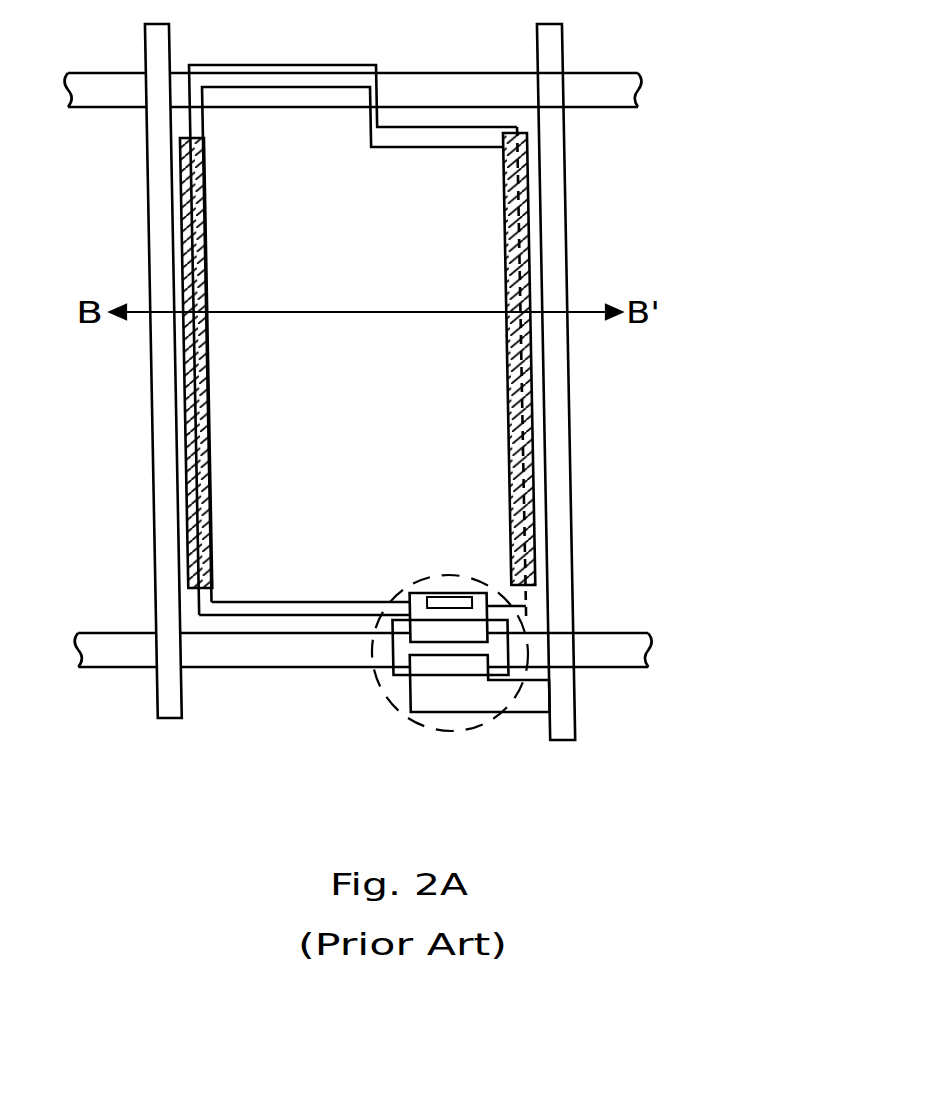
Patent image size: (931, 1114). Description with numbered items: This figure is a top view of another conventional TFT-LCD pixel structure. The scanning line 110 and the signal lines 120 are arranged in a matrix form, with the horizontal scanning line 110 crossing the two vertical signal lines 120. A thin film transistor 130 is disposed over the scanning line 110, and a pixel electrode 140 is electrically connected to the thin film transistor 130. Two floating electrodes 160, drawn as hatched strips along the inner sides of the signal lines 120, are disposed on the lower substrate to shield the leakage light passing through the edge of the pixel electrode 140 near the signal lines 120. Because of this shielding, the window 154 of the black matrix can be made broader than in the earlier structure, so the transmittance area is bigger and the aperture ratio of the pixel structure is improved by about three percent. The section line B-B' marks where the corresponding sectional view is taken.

The scanning line 110 is at (630, 648).
The signal line 120 is at (565, 721).
The thin film transistor 130 is at (510, 633).
The pixel electrode 140 is at (507, 128).
The window 154 is at (473, 215).
The floating electrode 160 is at (185, 380).